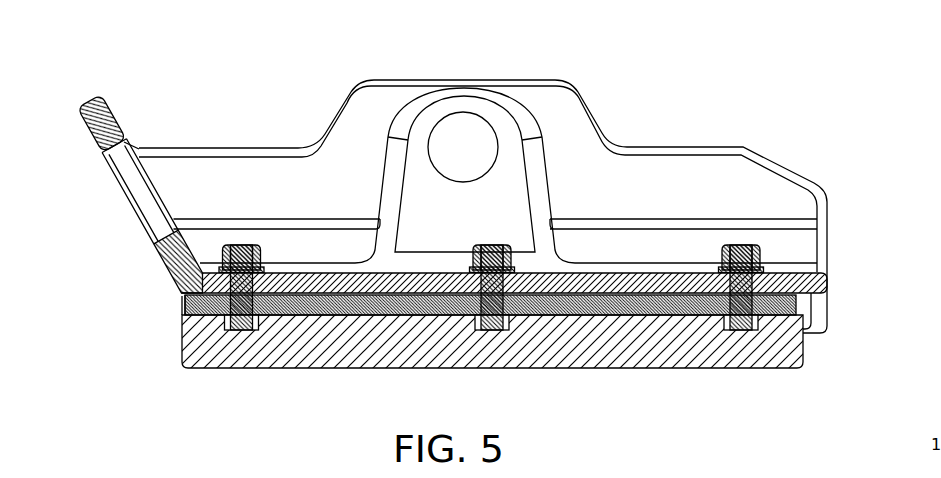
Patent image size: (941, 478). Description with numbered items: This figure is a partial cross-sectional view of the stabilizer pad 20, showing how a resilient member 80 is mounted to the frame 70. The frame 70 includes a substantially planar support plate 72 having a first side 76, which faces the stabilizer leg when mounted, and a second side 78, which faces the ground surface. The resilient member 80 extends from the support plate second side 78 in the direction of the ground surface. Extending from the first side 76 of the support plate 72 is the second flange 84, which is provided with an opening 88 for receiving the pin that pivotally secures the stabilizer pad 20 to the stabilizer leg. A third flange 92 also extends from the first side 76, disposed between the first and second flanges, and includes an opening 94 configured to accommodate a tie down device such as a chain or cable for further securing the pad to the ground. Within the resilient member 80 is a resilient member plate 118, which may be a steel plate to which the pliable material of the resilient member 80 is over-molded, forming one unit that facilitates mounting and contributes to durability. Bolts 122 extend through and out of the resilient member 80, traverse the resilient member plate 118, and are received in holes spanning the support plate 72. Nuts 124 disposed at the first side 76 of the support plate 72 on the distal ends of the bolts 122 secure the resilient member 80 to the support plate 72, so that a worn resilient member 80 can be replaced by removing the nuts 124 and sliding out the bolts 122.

The stabilizer pad 20 is at (133, 88).
The frame 70 is at (125, 140).
The support plate 72 is at (609, 273).
The first side 76 is at (797, 266).
The second side 78 is at (806, 297).
The resilient member 80 is at (780, 368).
The second flange 84 is at (588, 108).
The opening 88 is at (471, 112).
The third flange 92 is at (82, 116).
The opening 94 is at (113, 170).
The resilient member plate 118 is at (182, 300).
The bolt 122 is at (263, 272).
The nut 124 is at (226, 250).